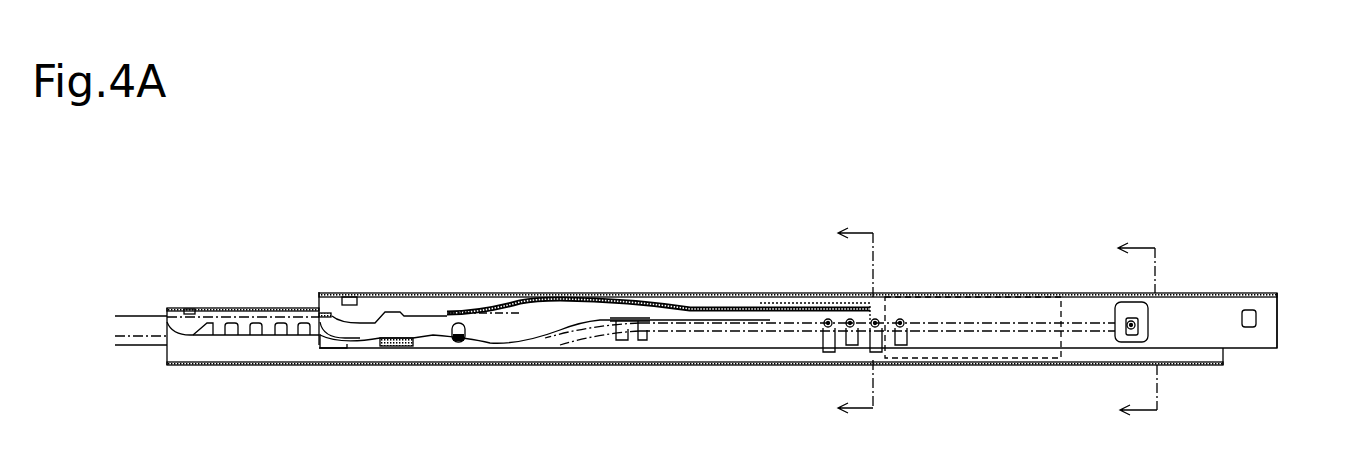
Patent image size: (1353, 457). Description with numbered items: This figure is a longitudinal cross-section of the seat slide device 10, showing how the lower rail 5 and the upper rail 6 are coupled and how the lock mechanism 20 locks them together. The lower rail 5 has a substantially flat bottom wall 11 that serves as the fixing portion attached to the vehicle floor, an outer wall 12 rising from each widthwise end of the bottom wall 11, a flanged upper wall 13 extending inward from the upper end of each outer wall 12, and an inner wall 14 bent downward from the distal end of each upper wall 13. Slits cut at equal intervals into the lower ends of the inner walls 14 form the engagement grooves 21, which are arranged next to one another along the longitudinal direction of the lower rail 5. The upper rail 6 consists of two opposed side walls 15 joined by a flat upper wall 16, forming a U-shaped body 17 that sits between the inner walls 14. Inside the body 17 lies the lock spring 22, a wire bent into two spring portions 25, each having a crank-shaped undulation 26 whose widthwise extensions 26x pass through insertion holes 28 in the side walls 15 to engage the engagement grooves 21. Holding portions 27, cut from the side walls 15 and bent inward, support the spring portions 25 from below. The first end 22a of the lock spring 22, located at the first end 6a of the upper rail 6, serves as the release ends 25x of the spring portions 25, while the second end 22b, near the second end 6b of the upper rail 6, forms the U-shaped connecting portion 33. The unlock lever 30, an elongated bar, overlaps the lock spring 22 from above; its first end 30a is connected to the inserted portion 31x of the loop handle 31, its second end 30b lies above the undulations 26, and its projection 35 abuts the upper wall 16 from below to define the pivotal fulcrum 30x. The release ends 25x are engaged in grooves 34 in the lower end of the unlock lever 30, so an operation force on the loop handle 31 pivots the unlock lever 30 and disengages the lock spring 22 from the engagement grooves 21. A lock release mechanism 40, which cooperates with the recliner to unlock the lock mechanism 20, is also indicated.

The seat slide device 10 is at (700, 302).
The lock mechanism 20 is at (134, 187).
The loop handle 31 is at (153, 297).
The inserted portion 31x is at (150, 314).
The lower rail 5 is at (218, 332).
The upper wall 13 is at (218, 332).
The outer wall 12 is at (166, 352).
The inner wall 14 is at (186, 331).
The engagement groove 21 is at (234, 335).
The first end of upper rail 6a is at (322, 292).
The second end of upper rail 6b is at (1275, 292).
The upper rail 6 is at (1214, 258).
The body 17 is at (1203, 292).
The upper wall 16 is at (687, 296).
The unlock lever 30 is at (722, 297).
The first end of unlock lever 30a is at (316, 336).
The second end of unlock lever 30b is at (850, 297).
The projection 35 is at (658, 268).
The pivotal fulcrum 30x is at (540, 297).
The lock spring 22 is at (738, 323).
The spring portion 25 is at (738, 323).
The first end of lock spring 22a is at (462, 299).
The release end 25x is at (443, 300).
The second end of lock spring 22b is at (1103, 379).
The connecting portion 33 is at (1137, 344).
The groove 34 is at (460, 343).
The holding portion 27 is at (613, 318).
The undulation 26 is at (865, 258).
The widthwise extension 26x is at (848, 318).
The insertion hole 28 is at (833, 350).
The lock release mechanism 40 is at (1062, 293).
The bottom wall 11 is at (645, 366).
The side wall 15 is at (1248, 348).